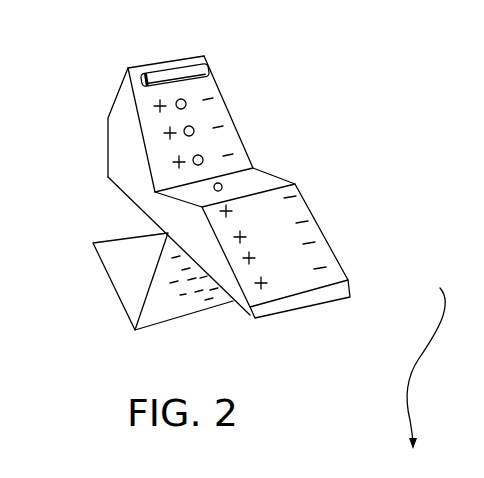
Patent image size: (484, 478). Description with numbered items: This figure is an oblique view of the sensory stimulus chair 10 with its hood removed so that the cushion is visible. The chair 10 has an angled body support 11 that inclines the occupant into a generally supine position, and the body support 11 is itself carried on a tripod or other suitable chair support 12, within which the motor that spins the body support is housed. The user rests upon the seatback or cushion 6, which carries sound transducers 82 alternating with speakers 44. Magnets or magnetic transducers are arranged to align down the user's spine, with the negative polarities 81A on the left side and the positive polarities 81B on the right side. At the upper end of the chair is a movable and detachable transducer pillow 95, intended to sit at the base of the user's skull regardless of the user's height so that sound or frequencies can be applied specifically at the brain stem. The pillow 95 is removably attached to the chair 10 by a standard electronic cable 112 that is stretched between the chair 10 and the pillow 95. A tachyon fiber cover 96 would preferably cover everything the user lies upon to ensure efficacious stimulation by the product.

The sensory stimulus chair 10 is at (357, 268).
The seatback cushion 6 is at (164, 160).
The body support 11 is at (140, 210).
The chair support 12 is at (208, 310).
The speakers 44 is at (187, 98).
The negative polarities 81A is at (294, 197).
The positive polarities 81B is at (164, 135).
The sound transducers 82 is at (245, 156).
The transducer pillow 95 is at (139, 66).
The tachyon fiber cover 96 is at (198, 57).
The electronic cable 112 is at (125, 79).